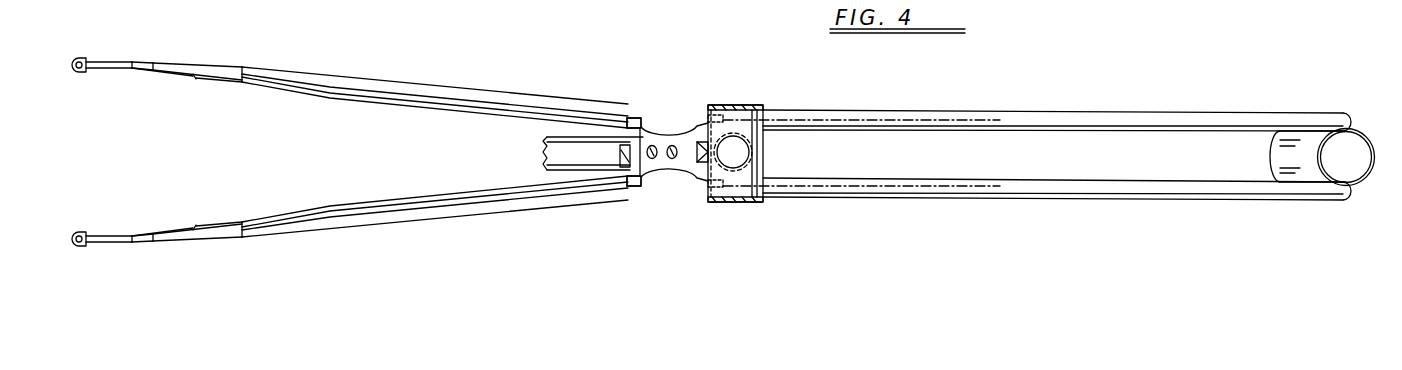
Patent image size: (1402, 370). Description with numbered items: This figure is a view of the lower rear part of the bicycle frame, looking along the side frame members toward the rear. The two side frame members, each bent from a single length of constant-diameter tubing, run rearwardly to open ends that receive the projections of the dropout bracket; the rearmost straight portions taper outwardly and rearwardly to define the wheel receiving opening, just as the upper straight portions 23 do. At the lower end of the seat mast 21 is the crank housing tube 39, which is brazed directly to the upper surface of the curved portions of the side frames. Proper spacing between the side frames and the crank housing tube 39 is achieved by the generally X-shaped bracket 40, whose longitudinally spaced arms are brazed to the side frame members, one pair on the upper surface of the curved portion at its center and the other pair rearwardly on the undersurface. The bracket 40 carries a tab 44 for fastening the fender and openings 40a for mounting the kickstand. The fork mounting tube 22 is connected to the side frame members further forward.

The seat mast 21 is at (565, 150).
The fork mounting tube 22 is at (1273, 154).
The first downwardly, rearwardly inclined straight portion 23 is at (445, 108).
The crank housing tube 39 is at (757, 155).
The X-shaped bracket 40 is at (693, 157).
The openings 40a is at (652, 146).
The tab 44 is at (623, 170).